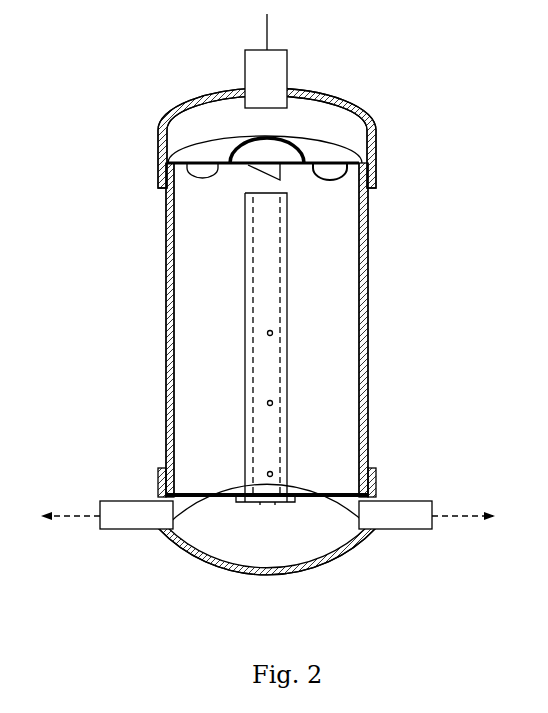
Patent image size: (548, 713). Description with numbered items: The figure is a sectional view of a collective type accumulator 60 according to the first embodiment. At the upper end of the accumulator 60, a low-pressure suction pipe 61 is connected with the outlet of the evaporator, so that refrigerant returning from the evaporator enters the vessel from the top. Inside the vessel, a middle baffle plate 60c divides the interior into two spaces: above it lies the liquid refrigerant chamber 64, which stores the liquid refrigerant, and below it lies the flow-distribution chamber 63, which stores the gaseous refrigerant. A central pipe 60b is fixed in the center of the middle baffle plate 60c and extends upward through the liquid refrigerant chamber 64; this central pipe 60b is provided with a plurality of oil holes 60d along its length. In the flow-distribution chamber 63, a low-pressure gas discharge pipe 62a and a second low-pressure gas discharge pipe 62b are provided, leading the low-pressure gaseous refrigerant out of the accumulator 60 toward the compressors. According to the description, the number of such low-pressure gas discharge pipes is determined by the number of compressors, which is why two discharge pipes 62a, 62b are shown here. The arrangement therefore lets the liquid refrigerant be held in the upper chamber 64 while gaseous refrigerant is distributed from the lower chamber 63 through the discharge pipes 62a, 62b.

The collective type accumulator 60 is at (166, 228).
The central pipe 60b is at (245, 301).
The middle baffle plate 60c is at (206, 490).
The oil holes 60d is at (276, 472).
The low-pressure suction pipe 61 is at (245, 50).
The low-pressure gas discharge pipe 62a is at (100, 500).
The low-pressure gas discharge pipe 62b is at (432, 500).
The flow-distribution chamber 63 is at (323, 537).
The liquid refrigerant chamber 64 is at (330, 350).